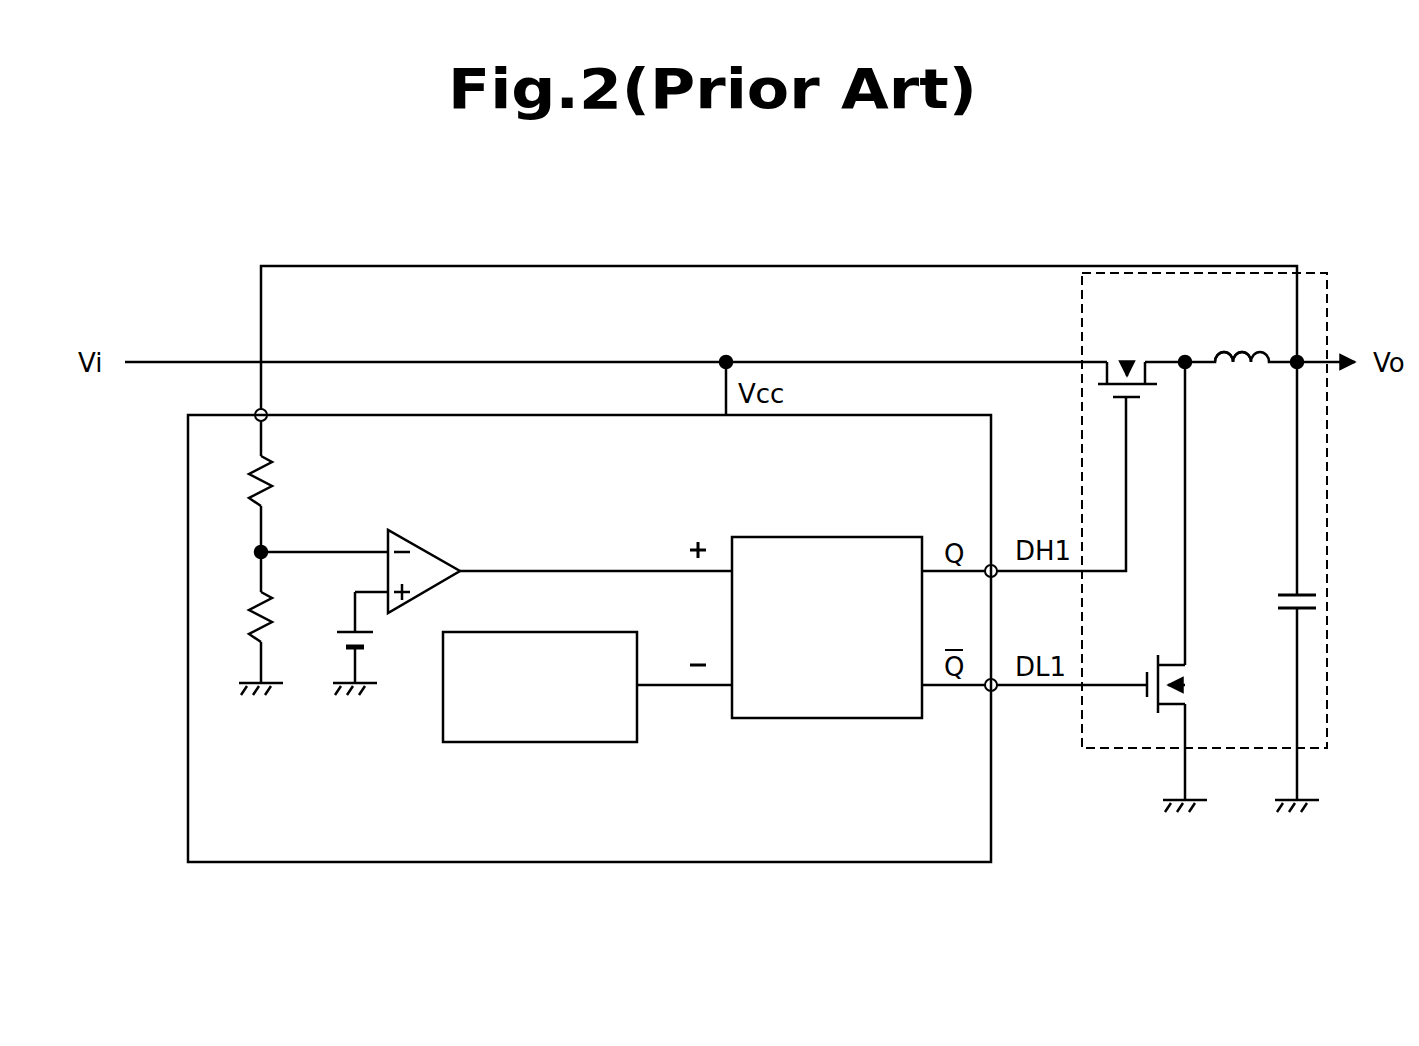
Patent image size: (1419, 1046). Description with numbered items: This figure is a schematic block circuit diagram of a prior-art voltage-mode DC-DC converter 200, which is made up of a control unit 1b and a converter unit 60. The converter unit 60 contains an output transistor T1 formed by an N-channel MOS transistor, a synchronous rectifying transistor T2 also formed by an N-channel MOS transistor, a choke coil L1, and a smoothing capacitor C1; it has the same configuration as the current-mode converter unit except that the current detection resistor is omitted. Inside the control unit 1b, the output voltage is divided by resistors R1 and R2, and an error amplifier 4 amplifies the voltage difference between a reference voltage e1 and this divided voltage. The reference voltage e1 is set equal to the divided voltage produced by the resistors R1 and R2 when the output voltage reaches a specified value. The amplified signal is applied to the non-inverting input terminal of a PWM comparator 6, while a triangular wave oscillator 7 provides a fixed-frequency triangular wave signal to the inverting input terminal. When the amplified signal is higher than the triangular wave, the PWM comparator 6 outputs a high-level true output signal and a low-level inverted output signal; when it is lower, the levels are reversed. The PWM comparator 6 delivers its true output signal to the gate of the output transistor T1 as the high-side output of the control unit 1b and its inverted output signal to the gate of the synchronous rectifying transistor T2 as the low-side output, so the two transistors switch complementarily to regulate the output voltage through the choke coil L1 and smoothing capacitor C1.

The voltage-mode DC-DC converter 200 is at (1320, 250).
The converter unit 60 is at (1329, 424).
The control unit 1b is at (991, 815).
The error amplifier 4 is at (431, 497).
The PWM comparator 6 is at (880, 537).
The triangular wave oscillator 7 is at (563, 632).
The resistor R1 is at (304, 488).
The resistor R2 is at (304, 604).
The reference voltage e1 is at (373, 643).
The output transistor T1 is at (1112, 362).
The synchronous rectifying transistor T2 is at (1172, 702).
The choke coil L1 is at (1230, 342).
The smoothing capacitor C1 is at (1286, 596).